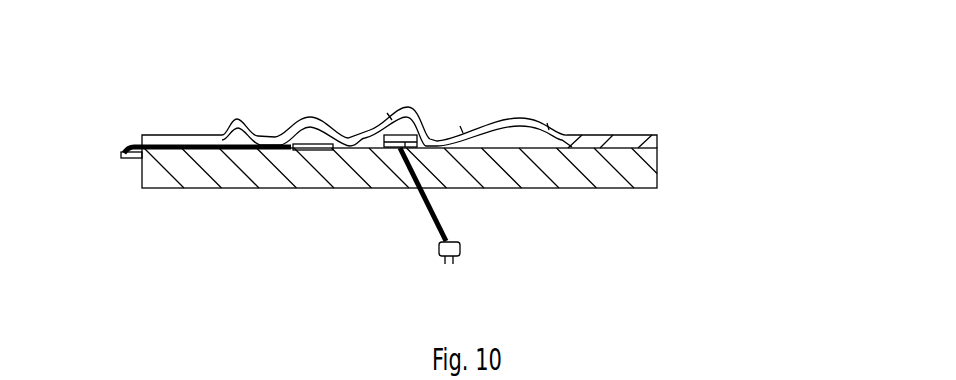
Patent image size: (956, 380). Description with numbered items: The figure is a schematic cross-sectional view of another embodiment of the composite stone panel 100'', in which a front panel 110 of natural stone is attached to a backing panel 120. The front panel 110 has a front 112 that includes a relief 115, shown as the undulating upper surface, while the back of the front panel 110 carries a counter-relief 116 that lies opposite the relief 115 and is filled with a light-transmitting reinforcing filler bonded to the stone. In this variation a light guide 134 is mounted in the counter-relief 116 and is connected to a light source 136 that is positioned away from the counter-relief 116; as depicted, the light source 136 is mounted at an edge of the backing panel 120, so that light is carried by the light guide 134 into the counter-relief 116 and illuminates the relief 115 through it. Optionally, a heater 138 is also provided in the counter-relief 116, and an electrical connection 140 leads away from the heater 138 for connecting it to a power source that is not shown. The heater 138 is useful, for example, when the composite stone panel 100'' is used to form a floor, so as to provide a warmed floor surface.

The composite stone panel 100'' is at (671, 54).
The front panel 110 is at (657, 142).
The front 112 is at (180, 137).
The relief 115 is at (322, 125).
The counter-relief 116 is at (533, 140).
The backing panel 120 is at (657, 178).
The light guide 134 is at (312, 148).
The light source 136 is at (132, 157).
The heater 138 is at (417, 121).
The electrical connection 140 is at (448, 222).